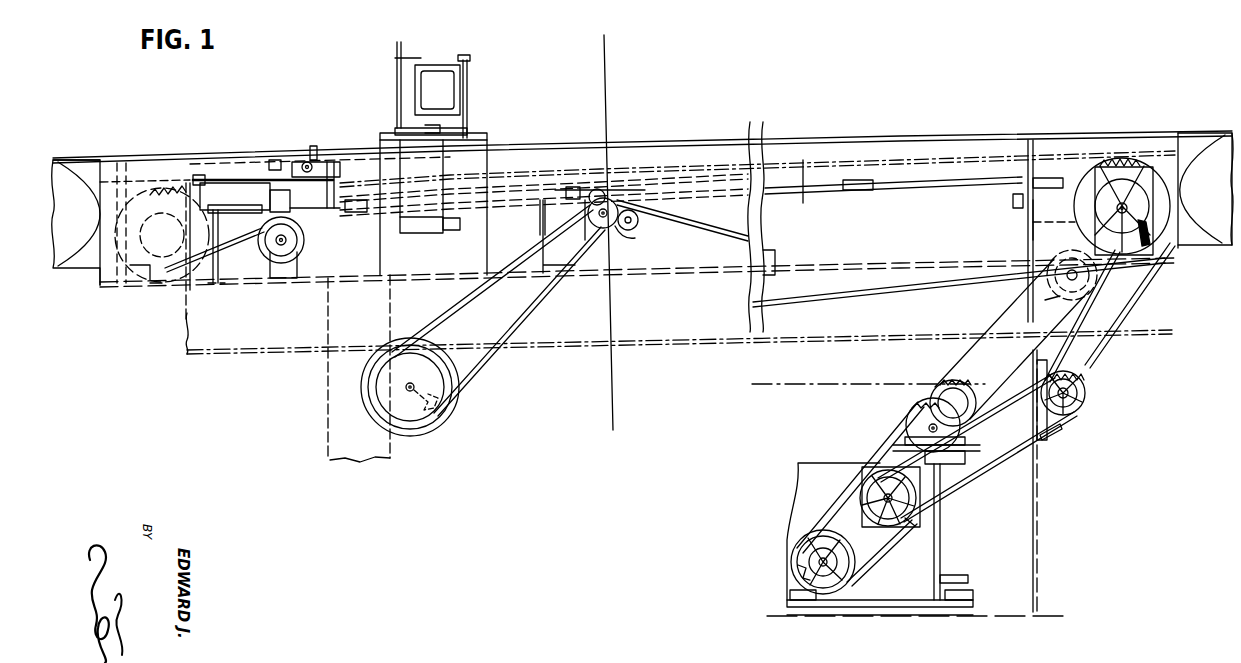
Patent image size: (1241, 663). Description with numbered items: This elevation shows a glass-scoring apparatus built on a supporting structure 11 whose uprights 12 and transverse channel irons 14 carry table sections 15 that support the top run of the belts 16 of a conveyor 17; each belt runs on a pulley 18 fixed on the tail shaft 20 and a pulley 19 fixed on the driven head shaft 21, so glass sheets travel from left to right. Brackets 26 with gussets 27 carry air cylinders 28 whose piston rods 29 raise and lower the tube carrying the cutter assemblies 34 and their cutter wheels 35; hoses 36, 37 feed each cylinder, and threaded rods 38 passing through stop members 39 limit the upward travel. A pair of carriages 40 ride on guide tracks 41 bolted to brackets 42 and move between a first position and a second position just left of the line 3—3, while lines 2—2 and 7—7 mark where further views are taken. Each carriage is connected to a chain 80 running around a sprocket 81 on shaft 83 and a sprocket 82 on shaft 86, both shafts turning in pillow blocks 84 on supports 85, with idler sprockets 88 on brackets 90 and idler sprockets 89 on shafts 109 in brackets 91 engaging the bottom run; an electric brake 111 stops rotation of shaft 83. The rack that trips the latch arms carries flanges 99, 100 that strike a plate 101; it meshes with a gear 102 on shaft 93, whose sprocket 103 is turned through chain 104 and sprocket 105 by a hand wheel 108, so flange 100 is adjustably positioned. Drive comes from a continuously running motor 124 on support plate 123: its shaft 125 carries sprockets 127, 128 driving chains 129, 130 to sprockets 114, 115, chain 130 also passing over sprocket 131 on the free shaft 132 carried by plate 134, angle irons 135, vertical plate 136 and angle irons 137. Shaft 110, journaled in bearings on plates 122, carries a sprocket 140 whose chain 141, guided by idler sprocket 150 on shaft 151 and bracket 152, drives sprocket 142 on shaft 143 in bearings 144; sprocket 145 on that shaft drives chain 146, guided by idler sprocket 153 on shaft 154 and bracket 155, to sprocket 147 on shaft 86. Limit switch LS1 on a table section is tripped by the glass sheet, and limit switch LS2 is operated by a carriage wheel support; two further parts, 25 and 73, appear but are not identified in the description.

The section line 2- 2 is at (604, 38).
The section line 3— 3 is at (792, 175).
The section line 7- 7 is at (752, 384).
The supporting structure 11 is at (318, 366).
The uprights 12 is at (326, 442).
The transverse channel irons 14 is at (219, 283).
The table sections 15 is at (756, 134).
The belts 16 is at (90, 272).
The conveyor 17 is at (71, 156).
The pulley 18 is at (85, 172).
The pulley 19 is at (1230, 246).
The tail shaft 20 is at (59, 212).
The head shaft 21 is at (1222, 191).
The upright post 25 is at (1029, 145).
The brackets 26 is at (471, 135).
The gusset 27 is at (385, 264).
The air cylinder 28 is at (428, 234).
The piston rod 29 is at (433, 128).
The cutter assemblies 34 is at (403, 52).
The cutter wheel 35 is at (386, 138).
The hose 36 is at (488, 139).
The hose 37 is at (456, 230).
The vertical spaced rods 38 is at (462, 75).
The stop members 39 is at (454, 60).
The carriages 40 is at (238, 176).
The guide track 41 is at (926, 186).
The brackets 42 is at (538, 215).
The switch body 73 is at (312, 157).
The chain 80 is at (770, 262).
The sprocket 81 is at (172, 184).
The sprocket 82 is at (1122, 158).
The shaft 83 is at (189, 283).
The pillow blocks 84 is at (168, 280).
The supports 85 is at (142, 276).
The shaft 86 is at (1121, 214).
The idler sprockets 88 is at (300, 240).
The idler sprockets 89 is at (640, 222).
The brackets 90 is at (269, 258).
The brackets 91 is at (631, 233).
The shaft 93 is at (586, 222).
The horizontal flange 99 is at (358, 213).
The horizontal flange 100 is at (834, 191).
The plate 101 is at (568, 188).
The gear 102 is at (596, 189).
The sprocket 103 is at (608, 230).
The chain 104 is at (486, 352).
The sprocket 105 is at (432, 413).
The hand wheel 108 is at (410, 437).
The shafts 109 is at (668, 234).
The shaft 110 is at (879, 551).
The electric brake 111 is at (158, 296).
The sprocket 114 is at (912, 522).
The sprocket 115 is at (941, 491).
The plates 122 is at (806, 463).
The support plate 123 is at (880, 606).
The motor 124 is at (795, 595).
The motor shaft 125 is at (812, 556).
The sprocket 127 is at (800, 571).
The sprocket 128 is at (836, 518).
The chain 129 is at (893, 536).
The chain 130 is at (915, 426).
The sprocket 131 is at (908, 415).
The shaft 132 is at (905, 439).
The support plate 134 is at (978, 445).
The angle irons 135 is at (966, 452).
The vertical plate 136 is at (943, 538).
The angle irons 137 is at (946, 579).
The sprocket 140 is at (861, 482).
The chain 141 is at (1049, 433).
The sprocket 142 is at (1066, 372).
The shaft 143 is at (1086, 392).
The bearings 144 is at (1086, 406).
The sprocket 145 is at (1081, 419).
The chain 146 is at (1113, 351).
The sprocket 147 is at (1149, 246).
The idler sprocket 150 is at (930, 396).
The shaft 151 is at (977, 392).
The bracket 152 is at (957, 356).
The idler sprocket 153 is at (1070, 301).
The shaft 154 is at (1048, 300).
The bracket 155 is at (1046, 283).
The limit switch LS1 is at (273, 160).
The limit switch LS2 is at (199, 175).